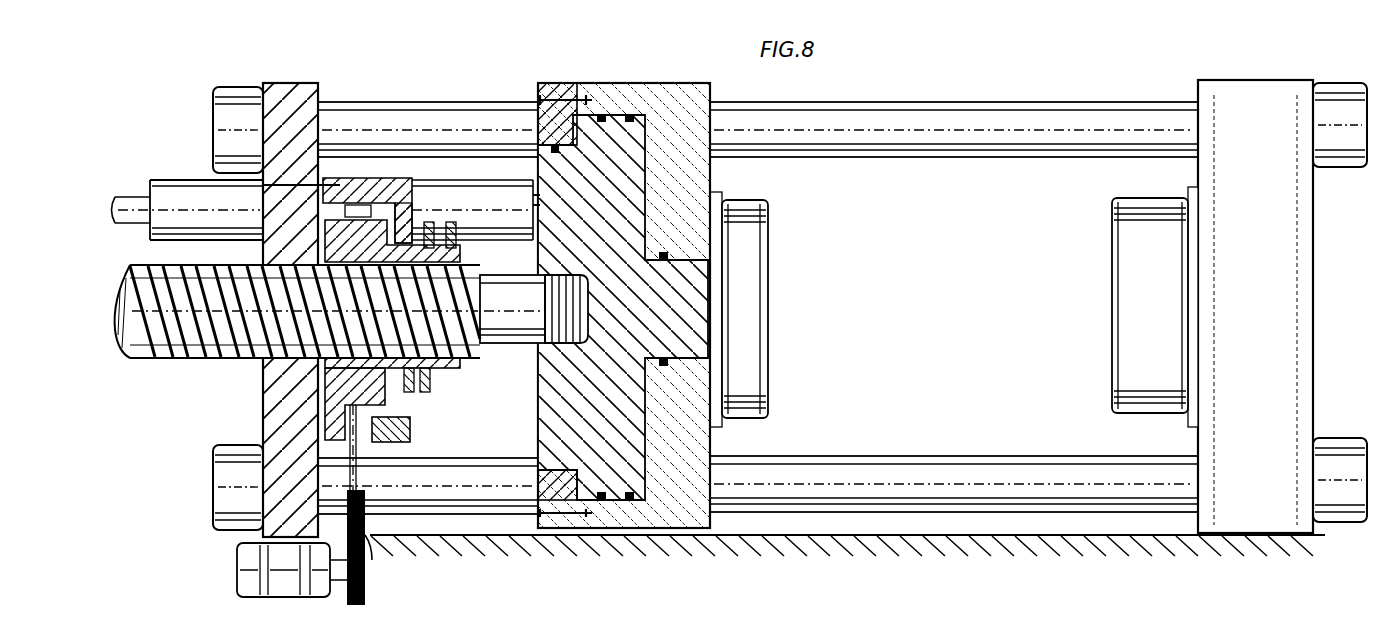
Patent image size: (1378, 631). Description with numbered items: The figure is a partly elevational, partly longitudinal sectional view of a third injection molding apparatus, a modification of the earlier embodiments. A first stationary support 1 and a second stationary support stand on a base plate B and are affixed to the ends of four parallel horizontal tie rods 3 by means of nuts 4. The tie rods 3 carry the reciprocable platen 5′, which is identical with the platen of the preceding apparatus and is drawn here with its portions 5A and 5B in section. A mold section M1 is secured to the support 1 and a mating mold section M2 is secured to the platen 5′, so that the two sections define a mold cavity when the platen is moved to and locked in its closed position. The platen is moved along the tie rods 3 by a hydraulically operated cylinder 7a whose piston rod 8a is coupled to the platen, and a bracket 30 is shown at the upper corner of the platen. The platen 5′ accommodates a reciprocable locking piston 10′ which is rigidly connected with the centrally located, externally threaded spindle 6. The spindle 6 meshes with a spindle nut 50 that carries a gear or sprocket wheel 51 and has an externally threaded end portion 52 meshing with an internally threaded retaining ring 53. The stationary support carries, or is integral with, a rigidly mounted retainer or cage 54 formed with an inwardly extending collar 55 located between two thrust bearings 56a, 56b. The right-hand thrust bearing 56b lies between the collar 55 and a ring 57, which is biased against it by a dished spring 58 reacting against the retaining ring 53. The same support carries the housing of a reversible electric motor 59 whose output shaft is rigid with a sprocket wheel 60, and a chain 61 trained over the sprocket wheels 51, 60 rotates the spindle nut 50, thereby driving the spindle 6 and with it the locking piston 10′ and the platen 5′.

The first stationary support 1 is at (1242, 88).
The tie rods 3 is at (962, 108).
The nuts 4 is at (240, 95).
The reciprocable platen 5′ is at (690, 92).
The head portion 5A is at (646, 392).
The head portion 5B is at (582, 488).
The spindle 6 is at (130, 296).
The hydraulically operated cylinder 7a is at (214, 186).
The piston rod 8a is at (546, 202).
The locking piston 10′ is at (616, 122).
The bracket 30 is at (560, 90).
The spindle nut 50 is at (330, 242).
The gear or sprocket wheel 51 is at (355, 198).
The externally threaded end portion 52 is at (462, 362).
The retaining ring 53 is at (458, 244).
The retainer or cage 54 is at (385, 180).
The collar 55 is at (412, 208).
The thrust bearing 56a is at (355, 402).
The thrust bearing 56b is at (408, 414).
The ring 57 is at (434, 228).
The dished spring 58 is at (428, 392).
The reversible electric motor 59 is at (238, 562).
The sprocket wheel 60 is at (348, 594).
The chain 61 is at (368, 532).
The base plate B is at (760, 538).
The mold section M1 is at (1124, 240).
The mold section M2 is at (756, 252).